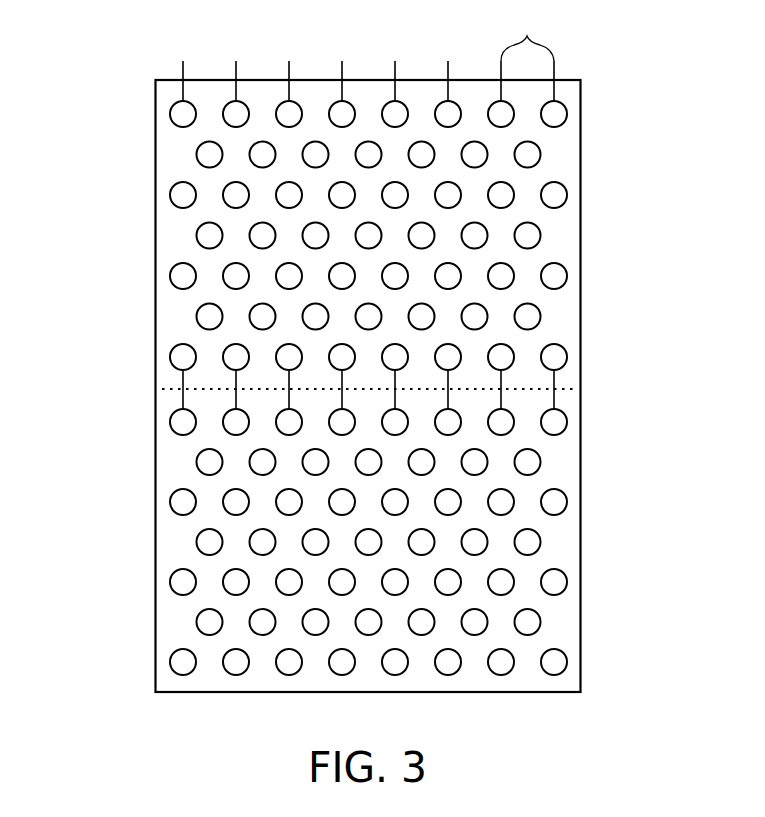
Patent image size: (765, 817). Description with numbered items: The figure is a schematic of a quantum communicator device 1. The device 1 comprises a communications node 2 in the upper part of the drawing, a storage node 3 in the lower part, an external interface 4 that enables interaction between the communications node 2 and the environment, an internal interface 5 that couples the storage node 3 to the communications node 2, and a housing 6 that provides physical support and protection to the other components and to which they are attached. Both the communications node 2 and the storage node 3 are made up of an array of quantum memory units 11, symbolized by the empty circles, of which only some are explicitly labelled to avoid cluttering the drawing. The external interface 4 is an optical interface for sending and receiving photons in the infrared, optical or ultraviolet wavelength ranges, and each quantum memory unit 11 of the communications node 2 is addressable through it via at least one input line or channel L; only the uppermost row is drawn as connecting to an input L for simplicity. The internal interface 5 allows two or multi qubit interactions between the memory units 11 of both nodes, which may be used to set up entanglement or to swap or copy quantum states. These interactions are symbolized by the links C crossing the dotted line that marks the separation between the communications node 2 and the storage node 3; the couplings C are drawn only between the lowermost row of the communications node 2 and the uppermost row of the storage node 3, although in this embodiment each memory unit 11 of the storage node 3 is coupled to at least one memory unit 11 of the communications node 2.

The quantum communicator device 1 is at (103, 73).
The communications node 2 is at (144, 238).
The storage node 3 is at (144, 530).
The external interface 4 is at (575, 55).
The internal interface 5 is at (587, 373).
The housing 6 is at (155, 630).
The quantum memory units 11 is at (566, 200).
The input line or channel L is at (527, 36).
The links or couplings C is at (181, 398).